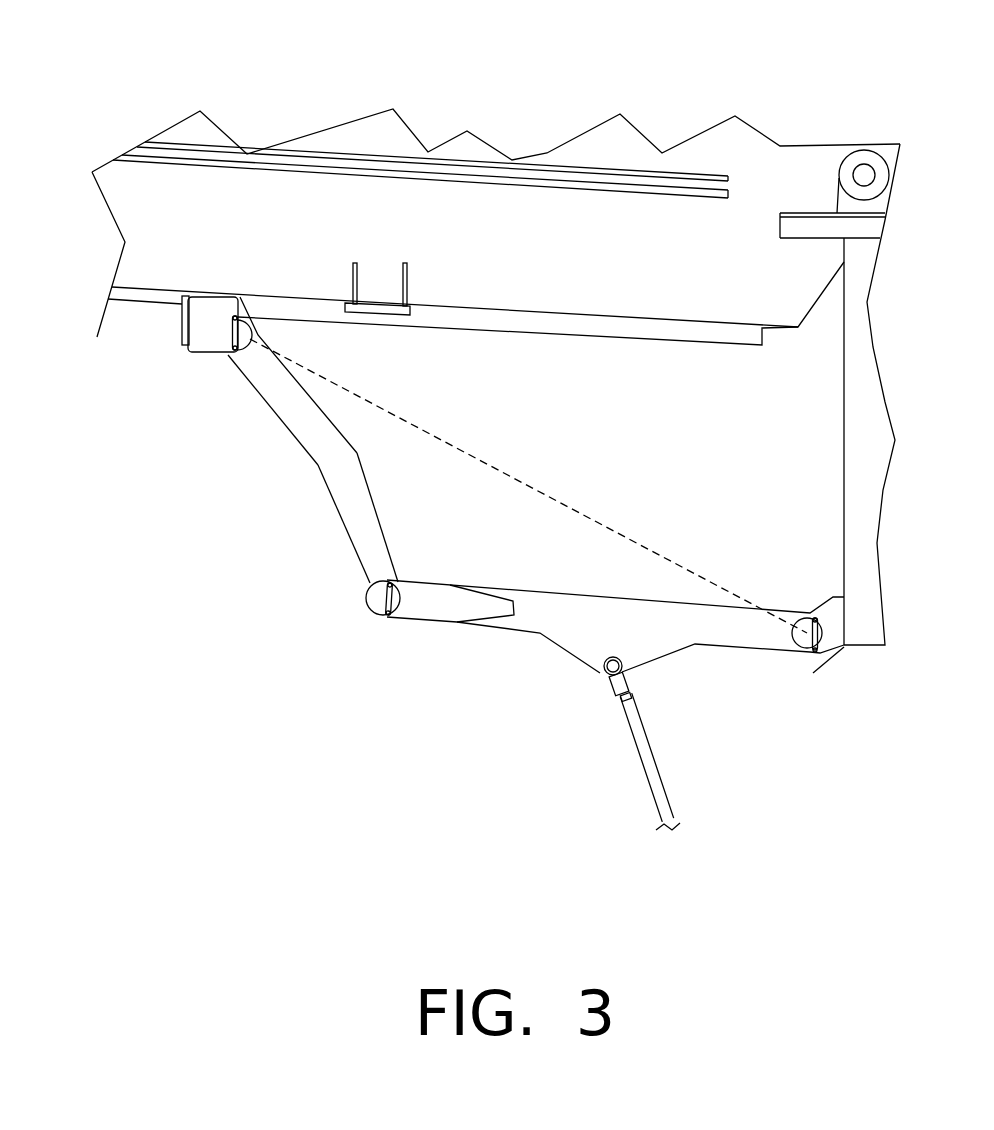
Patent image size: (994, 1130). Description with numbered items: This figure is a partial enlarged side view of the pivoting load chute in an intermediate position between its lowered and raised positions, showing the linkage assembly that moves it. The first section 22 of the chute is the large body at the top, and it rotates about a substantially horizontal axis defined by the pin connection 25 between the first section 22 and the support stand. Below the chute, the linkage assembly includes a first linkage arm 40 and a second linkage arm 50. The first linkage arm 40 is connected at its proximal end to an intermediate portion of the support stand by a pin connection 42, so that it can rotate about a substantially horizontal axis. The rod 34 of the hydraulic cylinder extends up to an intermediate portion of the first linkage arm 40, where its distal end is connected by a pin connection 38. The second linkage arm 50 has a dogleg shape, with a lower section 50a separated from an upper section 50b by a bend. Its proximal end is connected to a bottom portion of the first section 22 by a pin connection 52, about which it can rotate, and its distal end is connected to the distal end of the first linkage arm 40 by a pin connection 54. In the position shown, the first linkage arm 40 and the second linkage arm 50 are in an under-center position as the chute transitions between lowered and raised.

The first section 22 is at (123, 220).
The pin connection 25 is at (862, 178).
The rod 34 is at (632, 737).
The pin connection 38 is at (627, 663).
The first linkage arm 40 is at (603, 597).
The pin connection 42 is at (807, 620).
The second linkage arm 50 is at (497, 465).
The lower section 50a is at (348, 547).
The upper section 50b is at (253, 386).
The pin connection 52 is at (267, 337).
The pin connection 54 is at (370, 605).